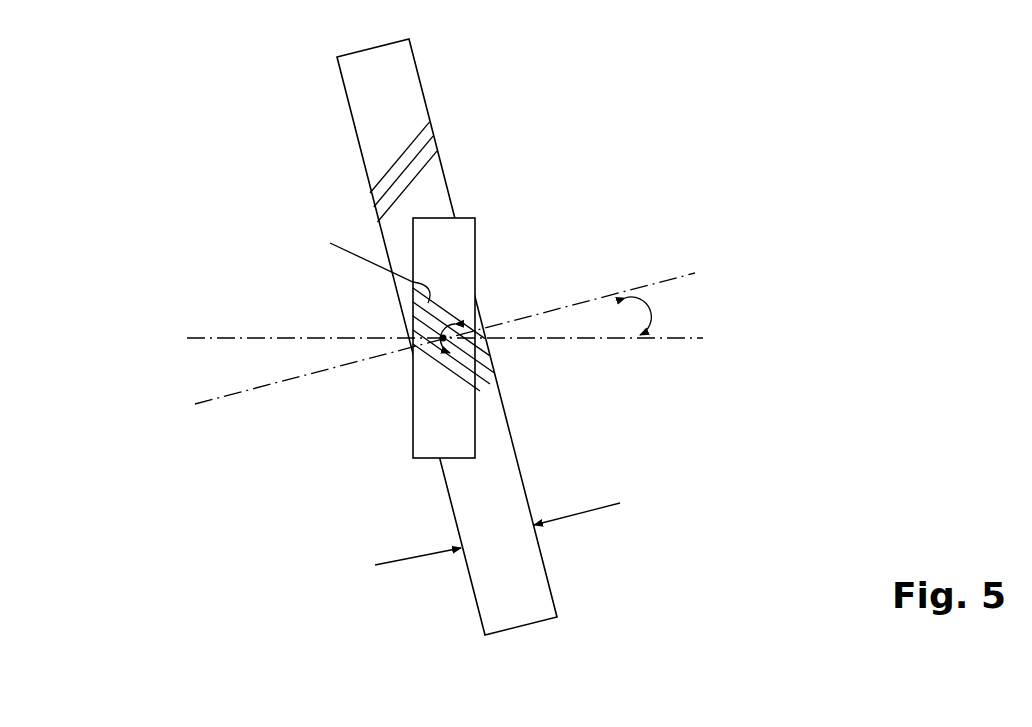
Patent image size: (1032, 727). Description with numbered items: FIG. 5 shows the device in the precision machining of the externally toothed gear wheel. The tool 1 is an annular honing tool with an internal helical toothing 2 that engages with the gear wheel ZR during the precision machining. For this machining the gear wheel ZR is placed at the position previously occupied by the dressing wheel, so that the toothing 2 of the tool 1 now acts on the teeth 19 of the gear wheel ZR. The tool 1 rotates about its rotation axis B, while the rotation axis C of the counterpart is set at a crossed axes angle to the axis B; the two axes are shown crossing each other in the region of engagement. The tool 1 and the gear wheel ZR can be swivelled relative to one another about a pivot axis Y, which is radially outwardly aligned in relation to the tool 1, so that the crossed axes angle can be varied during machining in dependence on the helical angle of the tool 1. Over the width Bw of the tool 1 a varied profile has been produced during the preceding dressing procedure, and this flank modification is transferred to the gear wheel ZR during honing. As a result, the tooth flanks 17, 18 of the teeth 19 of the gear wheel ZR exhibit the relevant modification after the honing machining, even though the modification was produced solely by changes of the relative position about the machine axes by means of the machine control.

The tool 1 is at (370, 107).
The internal helical toothing 2 is at (400, 160).
The gear wheel ZR is at (462, 258).
The tooth flank 17 is at (400, 311).
The tooth flank 18 is at (452, 362).
The teeth 19 is at (423, 318).
The rotation axis of the tool B is at (453, 332).
The rotation axis C is at (454, 341).
The pivot axis Y is at (447, 348).
The width of the tool Bw is at (497, 534).